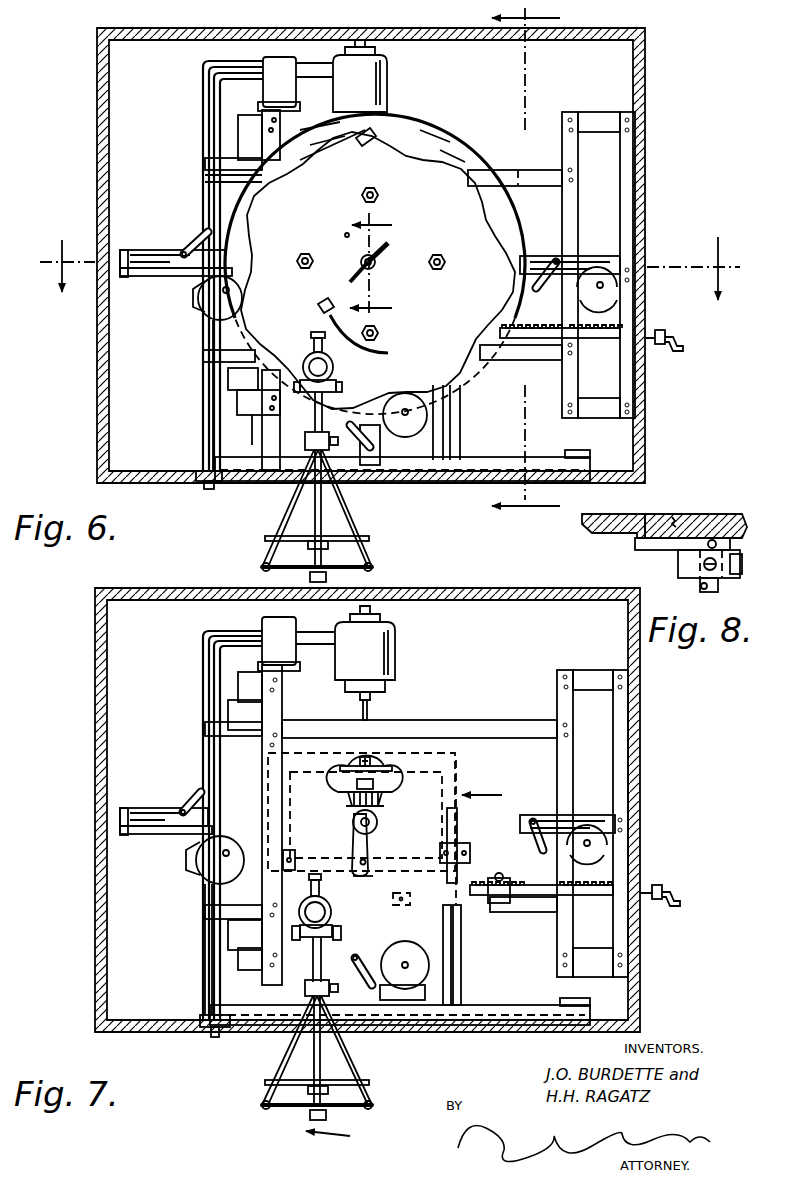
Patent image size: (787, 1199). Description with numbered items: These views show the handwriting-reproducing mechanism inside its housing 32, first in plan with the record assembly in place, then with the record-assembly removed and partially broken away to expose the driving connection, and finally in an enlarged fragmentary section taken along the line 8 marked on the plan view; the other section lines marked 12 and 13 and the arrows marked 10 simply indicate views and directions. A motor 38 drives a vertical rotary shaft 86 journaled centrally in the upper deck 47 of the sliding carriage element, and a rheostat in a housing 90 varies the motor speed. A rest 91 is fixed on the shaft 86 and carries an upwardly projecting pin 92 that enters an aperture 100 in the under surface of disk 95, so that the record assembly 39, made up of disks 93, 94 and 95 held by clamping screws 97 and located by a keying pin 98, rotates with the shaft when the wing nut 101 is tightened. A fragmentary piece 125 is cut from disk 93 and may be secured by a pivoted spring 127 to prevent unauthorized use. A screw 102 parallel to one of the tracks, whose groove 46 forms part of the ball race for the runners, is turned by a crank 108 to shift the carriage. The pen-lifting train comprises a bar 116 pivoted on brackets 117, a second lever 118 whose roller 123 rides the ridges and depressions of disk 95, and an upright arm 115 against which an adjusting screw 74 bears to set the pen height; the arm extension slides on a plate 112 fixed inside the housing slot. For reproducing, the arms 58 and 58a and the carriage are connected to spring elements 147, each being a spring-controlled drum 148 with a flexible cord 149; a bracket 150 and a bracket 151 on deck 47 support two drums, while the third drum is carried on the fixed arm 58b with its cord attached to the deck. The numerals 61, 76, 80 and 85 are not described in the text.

In FIG. 6, the section line 8— 8 is at (377, 265).
In FIG. 7, the direction arrows 10 is at (406, 970).
In FIG. 6, the section line 12- 12 is at (387, 262).
In FIG. 6, the section line 13- 13 is at (541, 257).
In FIG. 6, the housing 32 is at (646, 172).
In FIG. 7, the housing 32 is at (642, 733).
In FIG. 6, the motor 38 is at (360, 76).
In FIG. 7, the motor 38 is at (365, 663).
In FIG. 6, the record assembly 39 is at (470, 150).
In FIG. 8, the record assembly 39 is at (600, 536).
In FIG. 6, the groove of track 46 is at (212, 163).
In FIG. 7, the groove of track 46 is at (210, 729).
In FIG. 7, the upper deck 47 is at (361, 812).
In FIG. 6, the arm 58 is at (163, 258).
In FIG. 7, the arm 58 is at (165, 812).
In FIG. 6, the arm 58a is at (372, 455).
In FIG. 7, the arm 58a is at (348, 967).
In FIG. 6, the fixed arm 58b is at (622, 268).
In FIG. 7, the fixed arm 58b is at (616, 830).
In FIG. 6, the lever 61 is at (195, 245).
In FIG. 7, the lever 61 is at (194, 803).
In FIG. 7, the adjusting screw 74 is at (310, 1118).
In FIG. 7, the block 76 is at (306, 986).
In FIG. 7, the gauge 80 is at (332, 914).
In FIG. 6, the rack frame 85 is at (622, 172).
In FIG. 7, the rack frame 85 is at (617, 719).
In FIG. 6, the vertical rotary shaft 86 is at (361, 261).
In FIG. 7, the vertical rotary shaft 86 is at (378, 822).
In FIG. 8, the vertical rotary shaft 86 is at (700, 587).
In FIG. 6, the rheostat housing 90 is at (268, 263).
In FIG. 7, the rheostat housing 90 is at (269, 818).
In FIG. 7, the rest 91 is at (365, 878).
In FIG. 8, the rest 91 is at (680, 565).
In FIG. 7, the pin 92 is at (356, 858).
In FIG. 8, the pin 92 is at (640, 545).
In FIG. 6, the disk 93 is at (378, 270).
In FIG. 6, the disk 94 is at (250, 190).
In FIG. 6, the disk 95 is at (495, 186).
In FIG. 8, the disk 95 is at (592, 526).
In FIG. 6, the clamping screws 97 is at (378, 193).
In FIG. 6, the keying pin 98 is at (346, 233).
In FIG. 8, the aperture 100 is at (662, 505).
In FIG. 6, the wing nut 101 is at (390, 244).
In FIG. 6, the screw 102 is at (592, 340).
In FIG. 7, the screw 102 is at (592, 896).
In FIG. 6, the crank 108 is at (680, 346).
In FIG. 7, the crank 108 is at (678, 900).
In FIG. 6, the plate 112 is at (564, 464).
In FIG. 7, the plate 112 is at (544, 1012).
In FIG. 7, the upright arm 115 is at (358, 1084).
In FIG. 7, the bar 116 is at (420, 1002).
In FIG. 7, the brackets 117 is at (462, 986).
In FIG. 7, the second lever 118 is at (462, 944).
In FIG. 7, the roller 123 is at (462, 850).
In FIG. 6, the fragmentary piece 125 is at (380, 135).
In FIG. 6, the pivoted spring 127 is at (370, 140).
In FIG. 6, the spring elements 147 is at (206, 312).
In FIG. 7, the spring elements 147 is at (204, 876).
In FIG. 6, the spring controlled rotary drum 148 is at (205, 352).
In FIG. 7, the spring controlled rotary drum 148 is at (600, 858).
In FIG. 6, the flexible cord 149 is at (158, 277).
In FIG. 7, the flexible cord 149 is at (138, 836).
In FIG. 7, the bracket 150 is at (348, 800).
In FIG. 7, the bracket 151 is at (415, 960).